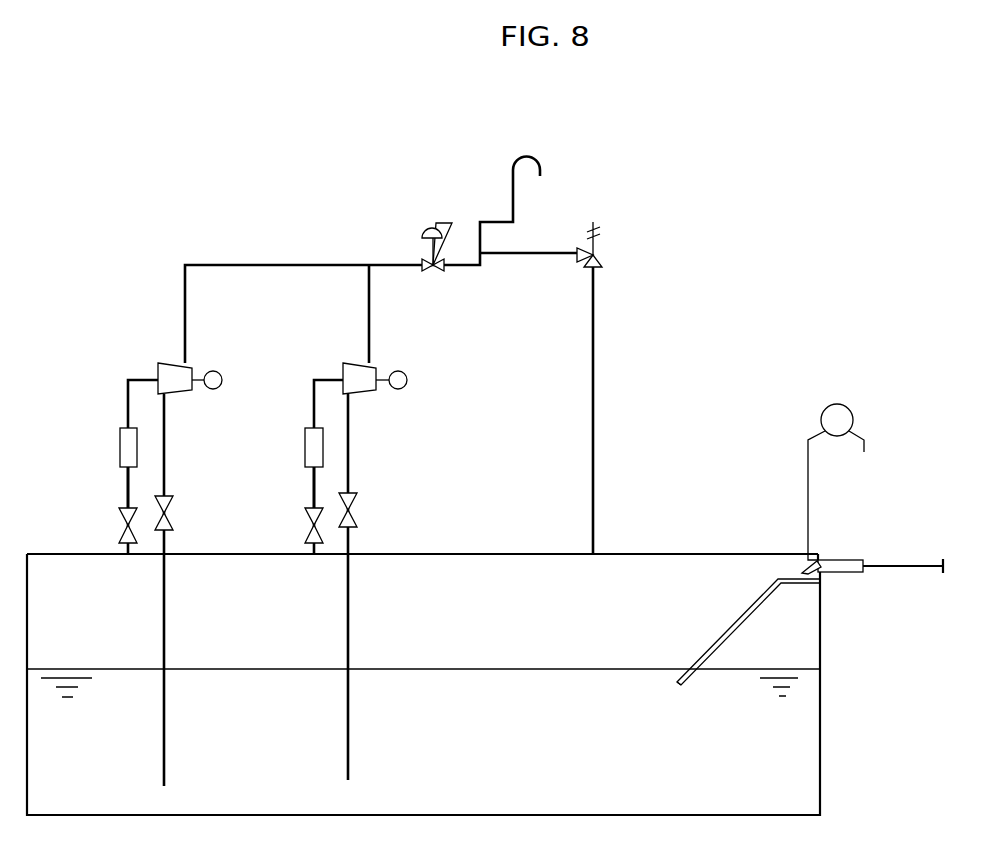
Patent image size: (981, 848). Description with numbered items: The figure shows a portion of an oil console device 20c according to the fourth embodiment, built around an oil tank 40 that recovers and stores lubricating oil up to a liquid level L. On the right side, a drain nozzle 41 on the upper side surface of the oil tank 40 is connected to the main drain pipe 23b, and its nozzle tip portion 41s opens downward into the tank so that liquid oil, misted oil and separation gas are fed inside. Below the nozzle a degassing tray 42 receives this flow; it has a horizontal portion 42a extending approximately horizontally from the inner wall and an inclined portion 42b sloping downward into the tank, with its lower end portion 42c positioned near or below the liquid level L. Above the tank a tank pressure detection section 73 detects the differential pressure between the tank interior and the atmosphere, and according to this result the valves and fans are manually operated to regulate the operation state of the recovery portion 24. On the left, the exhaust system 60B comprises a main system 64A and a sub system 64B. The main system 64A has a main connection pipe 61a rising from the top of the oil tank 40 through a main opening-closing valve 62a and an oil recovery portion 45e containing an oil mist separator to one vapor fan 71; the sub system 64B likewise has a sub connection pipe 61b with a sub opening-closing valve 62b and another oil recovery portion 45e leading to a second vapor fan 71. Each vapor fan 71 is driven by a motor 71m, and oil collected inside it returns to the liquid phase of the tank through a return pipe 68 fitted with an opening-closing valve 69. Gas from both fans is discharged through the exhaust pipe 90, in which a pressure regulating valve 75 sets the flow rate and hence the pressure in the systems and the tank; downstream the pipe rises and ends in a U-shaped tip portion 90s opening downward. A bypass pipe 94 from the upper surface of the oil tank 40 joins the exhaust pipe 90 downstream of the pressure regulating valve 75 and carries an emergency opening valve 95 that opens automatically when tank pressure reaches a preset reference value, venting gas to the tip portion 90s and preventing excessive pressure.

The exhaust system 60B is at (321, 472).
The exhaust pipe 90 is at (262, 265).
The tip portion 90s is at (536, 168).
The pressure regulating valve 75 is at (422, 265).
The emergency opening valve 95 is at (600, 253).
The bypass pipe 94 is at (597, 290).
The vapor fan 71 is at (187, 370).
The motor 71m is at (222, 378).
The main system 64A is at (118, 409).
The sub system 64B is at (328, 406).
The oil recovery portion 45e is at (128, 448).
The main connection pipe 61a is at (128, 492).
The sub connection pipe 61b is at (314, 492).
The main opening-closing valve 62a is at (124, 524).
The sub opening-closing valve 62b is at (310, 524).
The return pipe 68 is at (166, 426).
The opening-closing valve 69 is at (170, 514).
The oil tank 40 is at (563, 548).
The recovery portion 24 is at (834, 745).
The oil console device 20c is at (762, 266).
The liquid level L is at (795, 668).
The tank pressure detection section 73 is at (840, 402).
The drain nozzle 41 is at (847, 560).
The nozzle tip portion 41s is at (808, 565).
The main drain pipe 23b is at (893, 563).
The degassing tray 42 is at (730, 599).
The horizontal portion 42a is at (792, 572).
The inclined portion 42b is at (745, 605).
The lower end portion 42c is at (676, 678).